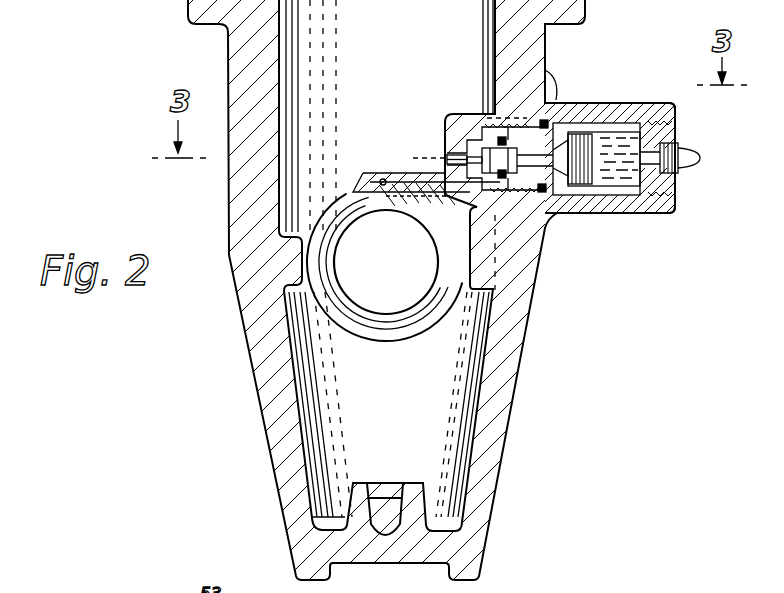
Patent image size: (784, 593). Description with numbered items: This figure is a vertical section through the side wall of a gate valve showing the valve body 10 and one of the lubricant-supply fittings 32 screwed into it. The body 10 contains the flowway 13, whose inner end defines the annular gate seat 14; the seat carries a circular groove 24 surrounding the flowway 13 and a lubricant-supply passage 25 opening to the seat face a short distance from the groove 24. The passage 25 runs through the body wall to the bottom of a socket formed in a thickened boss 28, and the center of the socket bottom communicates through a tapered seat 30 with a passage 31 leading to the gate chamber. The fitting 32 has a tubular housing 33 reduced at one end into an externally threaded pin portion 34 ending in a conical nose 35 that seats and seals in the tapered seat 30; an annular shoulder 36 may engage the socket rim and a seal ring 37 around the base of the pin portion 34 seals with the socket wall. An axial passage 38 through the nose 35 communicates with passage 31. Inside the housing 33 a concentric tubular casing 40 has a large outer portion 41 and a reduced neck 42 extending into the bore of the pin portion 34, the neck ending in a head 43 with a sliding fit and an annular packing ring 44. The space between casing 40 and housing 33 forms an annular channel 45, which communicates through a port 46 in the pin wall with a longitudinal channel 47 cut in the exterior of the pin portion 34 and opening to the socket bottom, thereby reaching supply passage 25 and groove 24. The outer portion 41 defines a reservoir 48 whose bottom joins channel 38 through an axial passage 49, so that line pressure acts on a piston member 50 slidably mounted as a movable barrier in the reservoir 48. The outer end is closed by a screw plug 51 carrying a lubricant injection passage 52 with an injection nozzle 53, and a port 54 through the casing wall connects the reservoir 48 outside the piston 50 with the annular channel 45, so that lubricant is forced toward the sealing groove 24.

The valve body 10 is at (236, 40).
The flowway 13 is at (368, 302).
The annular gate seat 14 is at (422, 325).
The circular groove 24 is at (395, 328).
The lubricant-supply passage 25 is at (383, 181).
The boss 28 is at (543, 222).
The tapered seat 30 is at (449, 158).
The passage 31 is at (440, 154).
The lubricant-supply fitting 32 is at (601, 96).
The tubular housing 33 is at (617, 108).
The pin portion 34 is at (474, 147).
The conical nose 35 is at (463, 150).
The annular shoulder 36 is at (558, 213).
The seal ring 37 is at (548, 120).
The axial passage 38 is at (488, 142).
The tubular casing 40 is at (612, 205).
The outer portion 41 is at (583, 135).
The neck 42 is at (505, 140).
The head 43 is at (452, 234).
The annular packing ring 44 is at (538, 250).
The annular channel 45 is at (596, 205).
The port 46 is at (537, 238).
The longitudinal channel 47 is at (537, 262).
The reservoir 48 is at (648, 210).
The axial passage 49 is at (538, 150).
The piston member 50 is at (598, 148).
The screw plug 51 is at (662, 138).
The lubricant injection passage 52 is at (663, 182).
The lubricant injection nozzle 53 is at (690, 150).
The port 54 is at (668, 212).